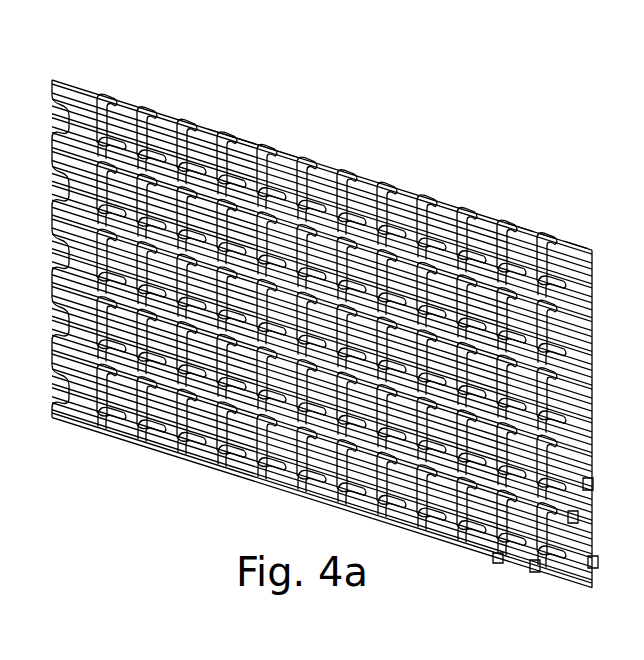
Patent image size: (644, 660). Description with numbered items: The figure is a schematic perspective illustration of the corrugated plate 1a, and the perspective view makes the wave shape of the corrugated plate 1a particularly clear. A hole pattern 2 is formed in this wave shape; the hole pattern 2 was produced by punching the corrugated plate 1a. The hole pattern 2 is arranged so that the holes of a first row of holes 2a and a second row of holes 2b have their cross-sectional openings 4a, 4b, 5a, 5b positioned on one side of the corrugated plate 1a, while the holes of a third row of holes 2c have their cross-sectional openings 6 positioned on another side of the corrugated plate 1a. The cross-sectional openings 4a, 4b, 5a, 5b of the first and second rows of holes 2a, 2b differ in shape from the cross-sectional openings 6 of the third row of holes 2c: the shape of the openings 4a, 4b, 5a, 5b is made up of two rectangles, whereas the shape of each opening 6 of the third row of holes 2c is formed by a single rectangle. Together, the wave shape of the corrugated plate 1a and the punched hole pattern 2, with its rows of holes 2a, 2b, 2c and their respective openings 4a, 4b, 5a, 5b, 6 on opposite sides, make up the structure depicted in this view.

The corrugated plate 1a is at (462, 100).
The hole pattern 2 is at (247, 134).
The first row of holes 2a is at (513, 205).
The second row of holes 2b is at (567, 211).
The third row of holes 2c is at (539, 206).
The cross-sectional opening 4a is at (490, 550).
The cross-sectional opening 4b is at (580, 477).
The cross-sectional opening 5a is at (587, 553).
The cross-sectional opening 5b is at (567, 510).
The cross-sectional opening 6 is at (527, 557).